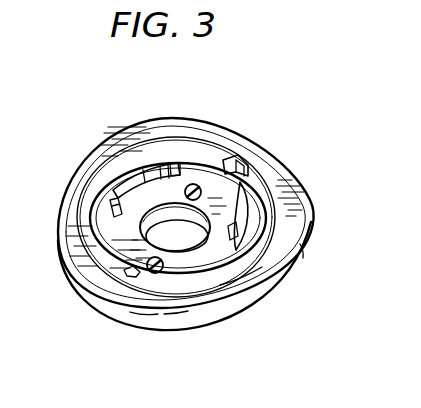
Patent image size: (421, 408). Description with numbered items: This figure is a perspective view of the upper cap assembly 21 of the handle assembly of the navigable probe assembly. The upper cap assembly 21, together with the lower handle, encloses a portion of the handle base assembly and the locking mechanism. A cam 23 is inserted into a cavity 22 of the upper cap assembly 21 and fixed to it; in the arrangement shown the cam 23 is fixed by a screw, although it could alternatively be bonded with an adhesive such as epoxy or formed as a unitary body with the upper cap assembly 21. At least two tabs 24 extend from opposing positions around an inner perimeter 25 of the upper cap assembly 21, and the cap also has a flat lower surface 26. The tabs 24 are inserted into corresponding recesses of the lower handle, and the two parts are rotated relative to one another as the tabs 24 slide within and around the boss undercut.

The upper cap assembly 21 is at (110, 110).
The cavity 22 is at (87, 237).
The cam 23 is at (170, 190).
The tabs 24 is at (232, 157).
The inner perimeter 25 is at (268, 242).
The flat lower surface 26 is at (96, 157).